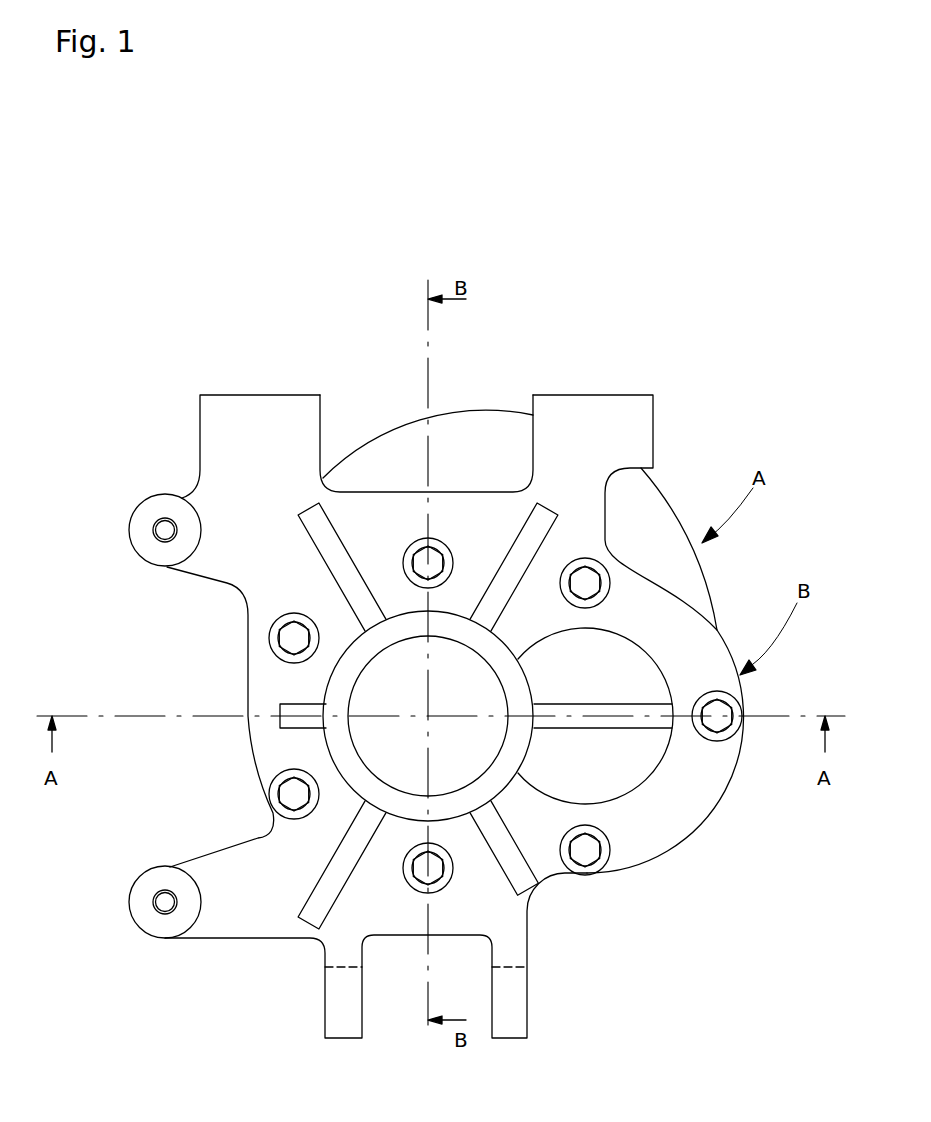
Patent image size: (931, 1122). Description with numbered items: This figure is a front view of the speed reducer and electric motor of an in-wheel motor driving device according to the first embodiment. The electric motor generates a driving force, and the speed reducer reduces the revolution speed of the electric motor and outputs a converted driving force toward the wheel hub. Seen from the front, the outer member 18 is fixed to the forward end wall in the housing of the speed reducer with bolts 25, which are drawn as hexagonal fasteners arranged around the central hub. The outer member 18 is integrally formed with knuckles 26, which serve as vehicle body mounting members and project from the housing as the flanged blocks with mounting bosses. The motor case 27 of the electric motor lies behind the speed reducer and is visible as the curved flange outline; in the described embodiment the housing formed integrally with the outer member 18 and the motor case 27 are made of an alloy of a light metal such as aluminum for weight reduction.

The outer member 18 is at (460, 793).
The bolts 25 is at (588, 852).
The knuckles 26 is at (612, 432).
The motor case 27 is at (673, 538).